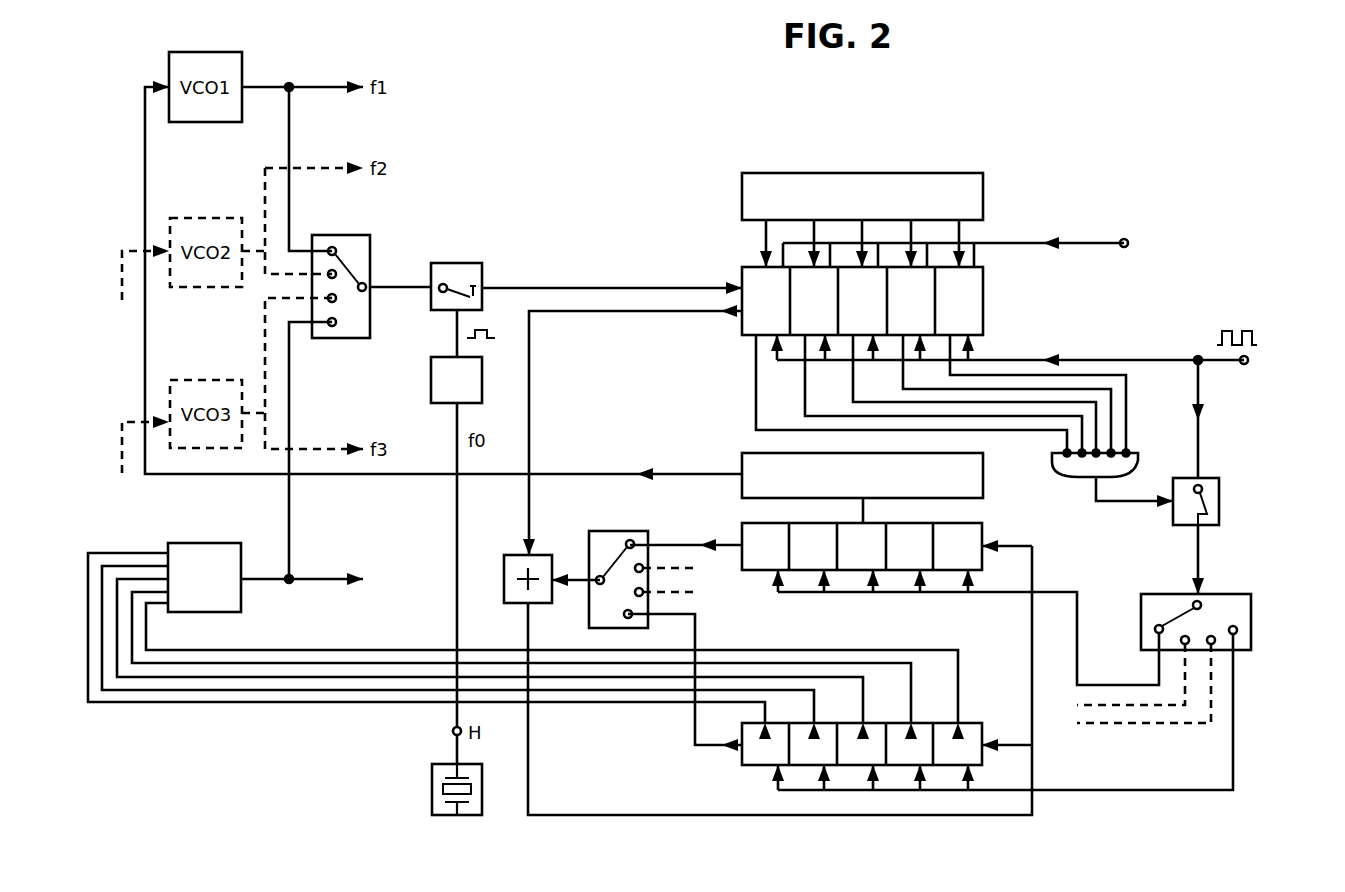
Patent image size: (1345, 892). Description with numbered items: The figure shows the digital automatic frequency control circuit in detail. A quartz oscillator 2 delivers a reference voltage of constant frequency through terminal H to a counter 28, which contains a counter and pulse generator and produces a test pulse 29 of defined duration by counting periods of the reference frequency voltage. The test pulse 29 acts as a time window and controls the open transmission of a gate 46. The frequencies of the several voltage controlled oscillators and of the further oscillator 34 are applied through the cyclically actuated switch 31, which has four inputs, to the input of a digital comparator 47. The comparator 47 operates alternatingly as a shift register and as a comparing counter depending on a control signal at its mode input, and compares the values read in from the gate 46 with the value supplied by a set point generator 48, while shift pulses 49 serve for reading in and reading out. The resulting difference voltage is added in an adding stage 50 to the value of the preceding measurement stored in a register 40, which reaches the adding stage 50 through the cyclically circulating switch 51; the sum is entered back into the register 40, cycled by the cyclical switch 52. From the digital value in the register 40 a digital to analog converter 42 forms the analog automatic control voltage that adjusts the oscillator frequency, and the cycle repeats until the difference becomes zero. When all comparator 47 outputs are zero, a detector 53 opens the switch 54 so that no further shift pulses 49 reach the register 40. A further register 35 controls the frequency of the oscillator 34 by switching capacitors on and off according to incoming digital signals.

The quartz oscillator 2 is at (445, 789).
The counter 28 is at (445, 394).
The test pulse 29 is at (492, 324).
The switch 31 is at (356, 250).
The oscillator 34 is at (208, 548).
The register 35 is at (745, 757).
The register 40 is at (970, 535).
The digital to analog converter 42 is at (968, 483).
The gate 46 is at (460, 272).
The digital comparator 47 is at (755, 277).
The set point generator 48 is at (757, 183).
The shift pulses 49 is at (1017, 360).
The adding stage 50 is at (504, 581).
The switch 51 is at (605, 538).
The switch 52 is at (1218, 603).
The detector 53 is at (1130, 465).
The switch 54 is at (1221, 500).